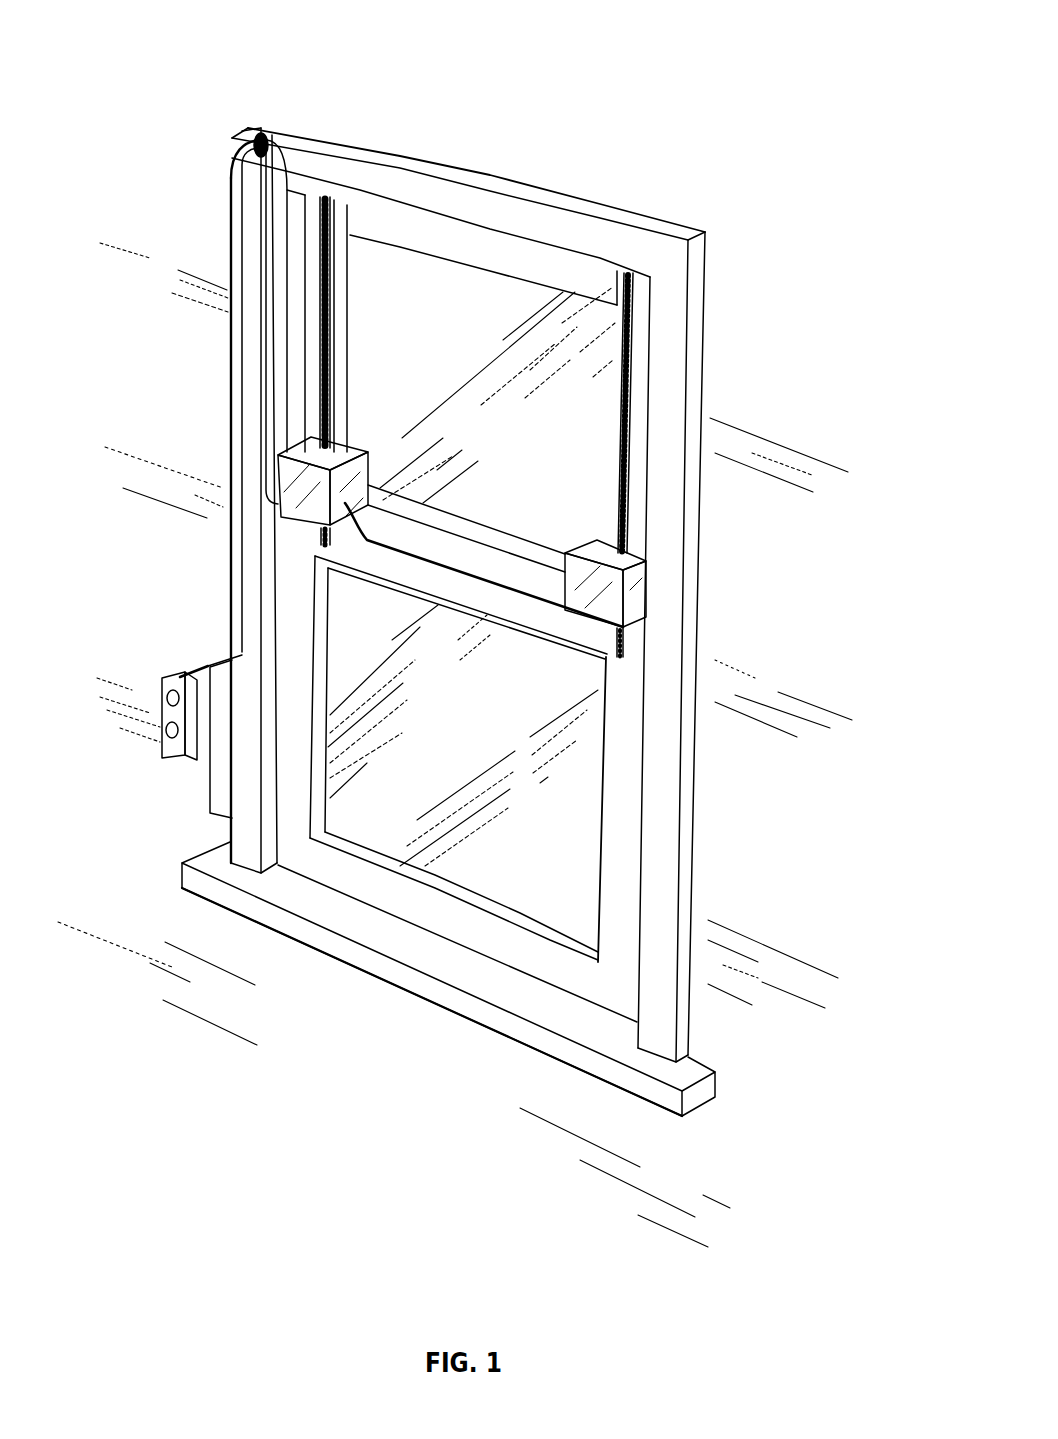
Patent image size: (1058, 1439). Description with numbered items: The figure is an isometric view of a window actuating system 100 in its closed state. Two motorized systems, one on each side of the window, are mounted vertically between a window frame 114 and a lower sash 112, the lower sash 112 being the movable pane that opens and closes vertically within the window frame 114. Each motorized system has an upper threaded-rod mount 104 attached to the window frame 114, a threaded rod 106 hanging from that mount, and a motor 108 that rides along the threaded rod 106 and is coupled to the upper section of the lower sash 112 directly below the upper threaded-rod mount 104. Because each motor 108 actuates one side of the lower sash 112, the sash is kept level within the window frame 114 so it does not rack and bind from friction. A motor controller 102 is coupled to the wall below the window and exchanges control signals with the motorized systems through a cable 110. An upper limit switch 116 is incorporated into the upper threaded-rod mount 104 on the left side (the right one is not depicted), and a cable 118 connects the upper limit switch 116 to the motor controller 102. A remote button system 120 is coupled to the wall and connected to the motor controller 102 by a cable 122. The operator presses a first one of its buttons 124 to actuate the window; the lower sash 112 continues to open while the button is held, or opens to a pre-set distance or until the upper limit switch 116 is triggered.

The window actuating system 100 is at (861, 66).
The motor controller 102 is at (222, 788).
The upper threaded-rod mount 104 is at (577, 258).
The threaded rod 106 is at (617, 396).
The motor 108 is at (578, 563).
The cable 110 is at (232, 372).
The lower sash 112 is at (468, 600).
The window frame 114 is at (658, 252).
The upper limit switch 116 is at (308, 203).
The cable 118 is at (272, 163).
The remote button system 120 is at (168, 752).
The cable 122 is at (182, 668).
The buttons 124 is at (167, 698).